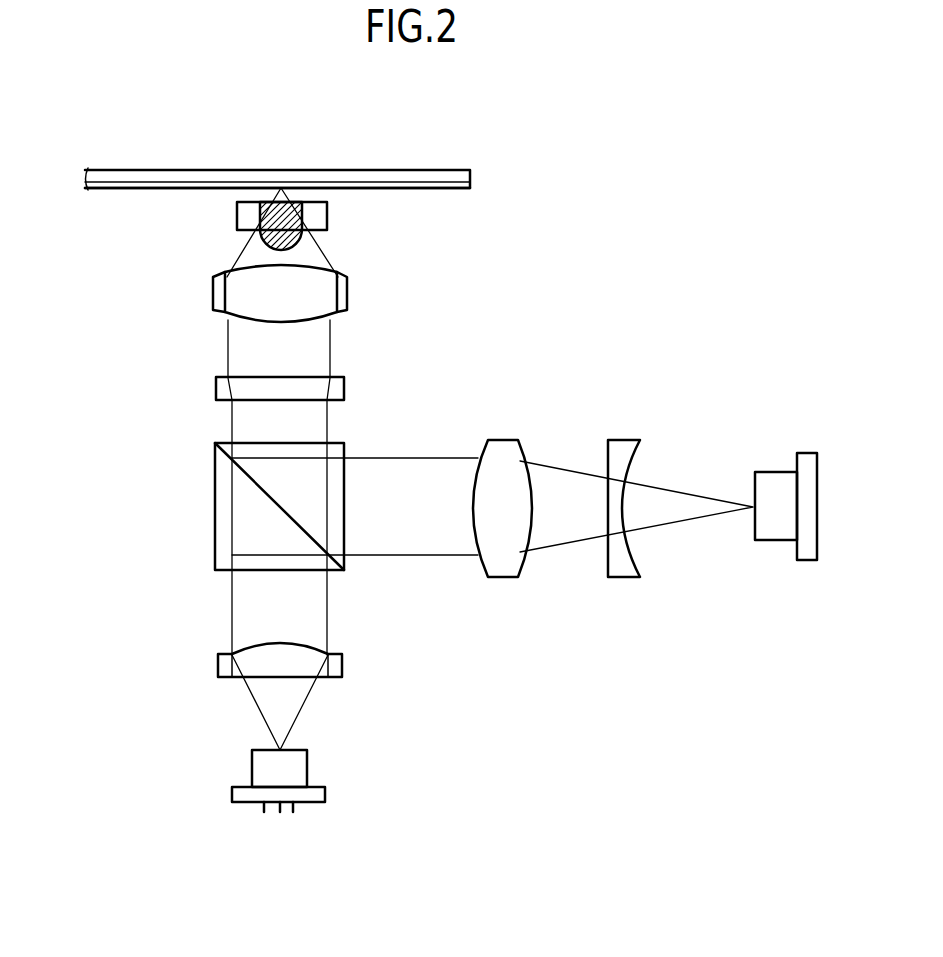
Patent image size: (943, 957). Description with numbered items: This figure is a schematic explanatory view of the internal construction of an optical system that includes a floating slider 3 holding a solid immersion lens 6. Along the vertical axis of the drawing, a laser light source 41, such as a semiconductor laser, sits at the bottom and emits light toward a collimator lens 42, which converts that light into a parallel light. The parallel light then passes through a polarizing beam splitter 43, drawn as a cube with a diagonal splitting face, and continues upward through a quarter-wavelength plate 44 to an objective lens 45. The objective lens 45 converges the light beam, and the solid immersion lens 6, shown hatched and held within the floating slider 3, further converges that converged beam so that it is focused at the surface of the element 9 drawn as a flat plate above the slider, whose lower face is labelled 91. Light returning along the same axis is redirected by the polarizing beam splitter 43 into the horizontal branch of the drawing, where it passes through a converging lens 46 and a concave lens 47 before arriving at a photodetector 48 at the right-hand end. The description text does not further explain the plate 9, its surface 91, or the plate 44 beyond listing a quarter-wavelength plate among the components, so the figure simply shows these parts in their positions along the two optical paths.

The optical disk 9 is at (407, 170).
The recording surface of optical disk 91 is at (425, 189).
The floating slider 3 is at (237, 211).
The solid immersion lens 6 is at (268, 250).
The objective lens 45 is at (213, 292).
The wave plate 44 is at (216, 388).
The polarizing beam splitter 43 is at (215, 497).
The collimator lens 42 is at (344, 670).
The laser light source 41 is at (309, 768).
The converging lens 46 is at (497, 578).
The concave lens 47 is at (613, 578).
The photodetector 48 is at (767, 541).